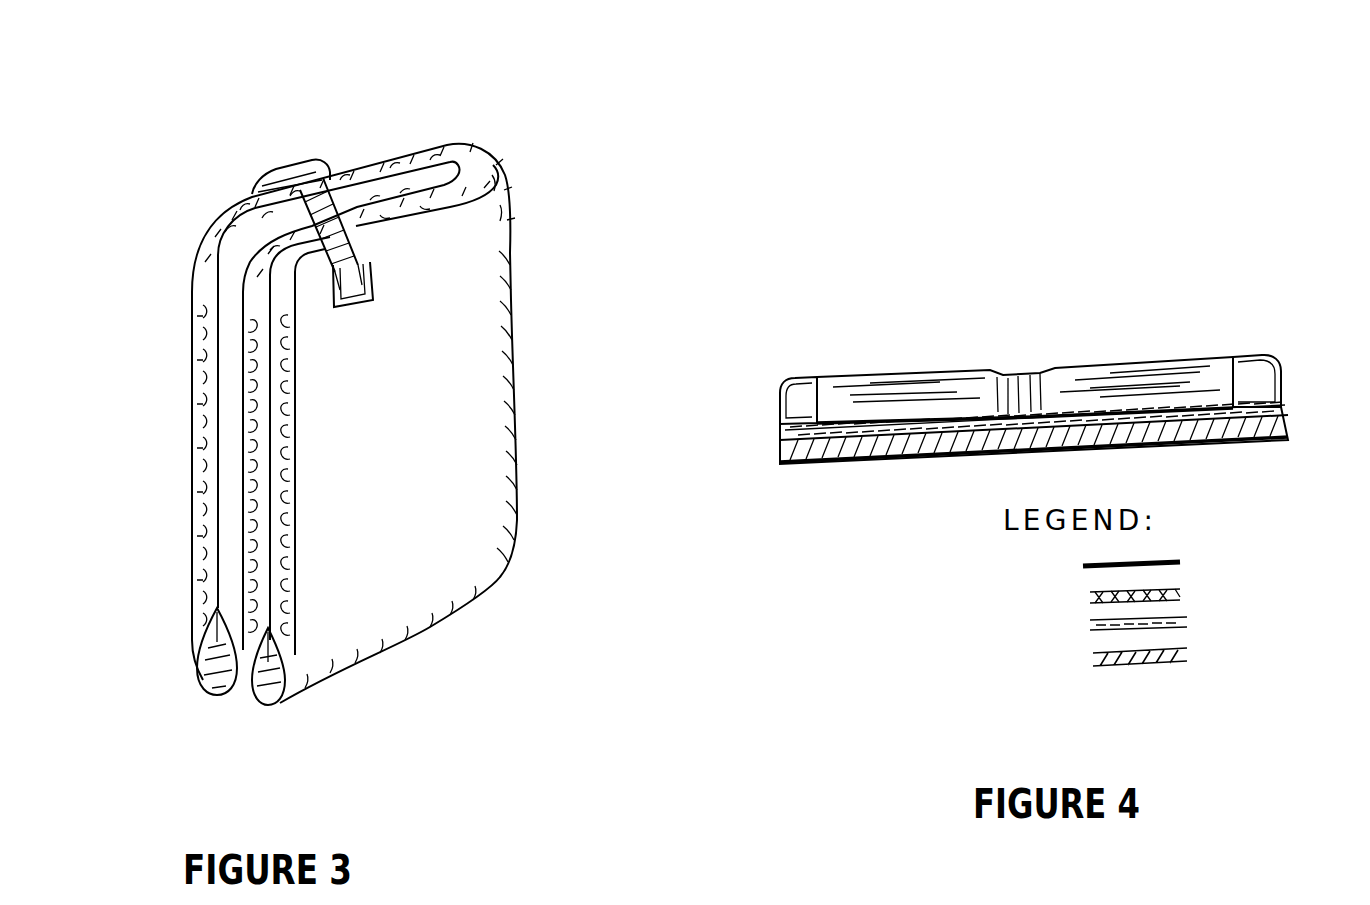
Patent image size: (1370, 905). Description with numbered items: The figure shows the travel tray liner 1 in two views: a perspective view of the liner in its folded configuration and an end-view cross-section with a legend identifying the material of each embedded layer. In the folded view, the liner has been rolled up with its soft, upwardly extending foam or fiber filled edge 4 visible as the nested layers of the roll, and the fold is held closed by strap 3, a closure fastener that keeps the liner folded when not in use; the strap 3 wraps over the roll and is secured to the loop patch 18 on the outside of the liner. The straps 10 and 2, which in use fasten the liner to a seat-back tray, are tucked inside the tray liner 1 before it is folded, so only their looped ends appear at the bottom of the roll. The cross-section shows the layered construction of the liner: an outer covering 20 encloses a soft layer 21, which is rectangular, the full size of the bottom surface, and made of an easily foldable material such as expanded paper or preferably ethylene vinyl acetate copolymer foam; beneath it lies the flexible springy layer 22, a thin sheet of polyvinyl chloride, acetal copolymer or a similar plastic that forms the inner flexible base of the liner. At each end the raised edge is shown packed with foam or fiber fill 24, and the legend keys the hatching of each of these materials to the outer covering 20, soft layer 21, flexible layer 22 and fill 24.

In FIG. 3, the travel tray liner 1 is at (370, 91).
In FIG. 4, the travel tray liner 1 is at (1217, 328).
In FIG. 3, the front strap 2 is at (263, 712).
In FIG. 3, the strap 3 is at (328, 180).
In FIG. 3, the raised edge 4 is at (207, 288).
In FIG. 3, the strap 10 is at (202, 672).
In FIG. 3, the loop patch 18 is at (373, 293).
In FIG. 4, the outer covering 20 is at (1187, 562).
In FIG. 4, the soft layer 21 is at (1197, 594).
In FIG. 4, the flexible springy layer 22 is at (1200, 623).
In FIG. 4, the foam or fiber fill 24 is at (777, 400).